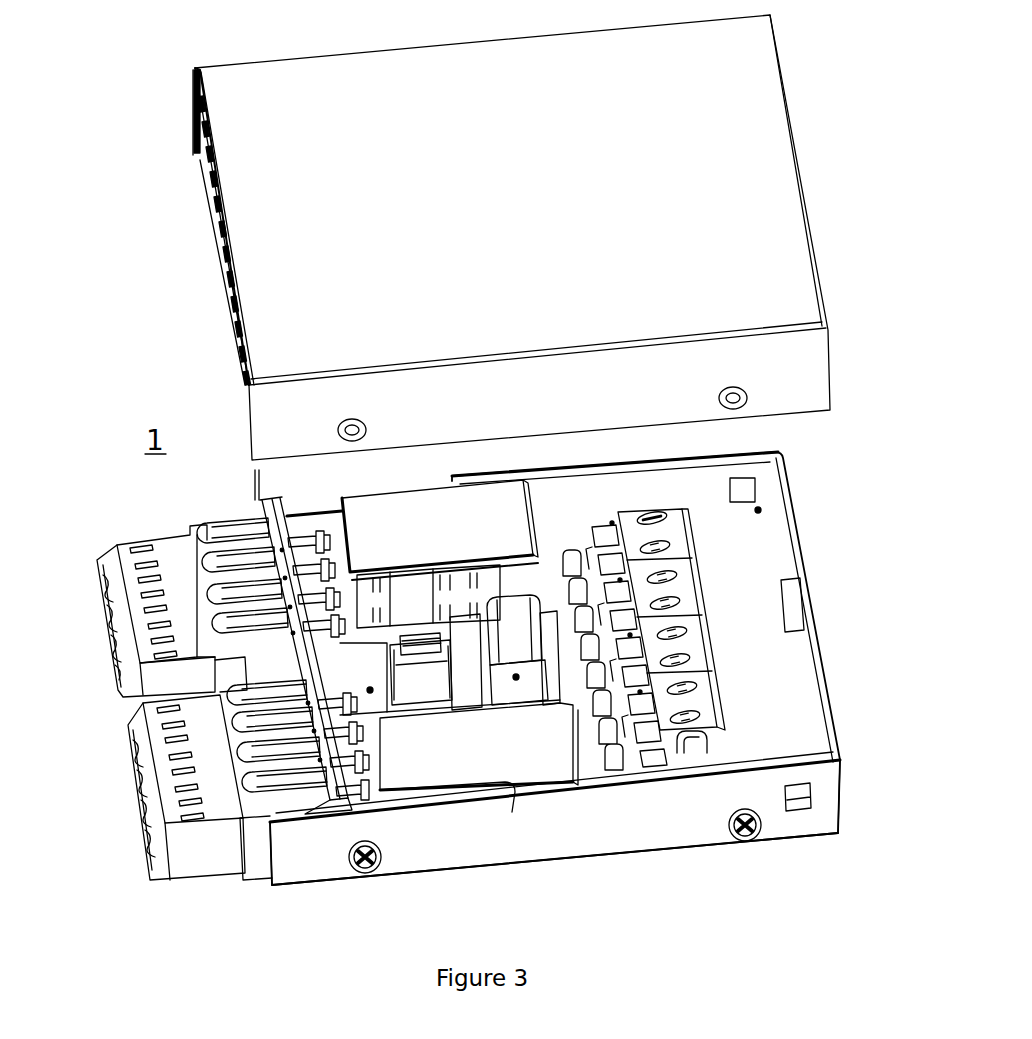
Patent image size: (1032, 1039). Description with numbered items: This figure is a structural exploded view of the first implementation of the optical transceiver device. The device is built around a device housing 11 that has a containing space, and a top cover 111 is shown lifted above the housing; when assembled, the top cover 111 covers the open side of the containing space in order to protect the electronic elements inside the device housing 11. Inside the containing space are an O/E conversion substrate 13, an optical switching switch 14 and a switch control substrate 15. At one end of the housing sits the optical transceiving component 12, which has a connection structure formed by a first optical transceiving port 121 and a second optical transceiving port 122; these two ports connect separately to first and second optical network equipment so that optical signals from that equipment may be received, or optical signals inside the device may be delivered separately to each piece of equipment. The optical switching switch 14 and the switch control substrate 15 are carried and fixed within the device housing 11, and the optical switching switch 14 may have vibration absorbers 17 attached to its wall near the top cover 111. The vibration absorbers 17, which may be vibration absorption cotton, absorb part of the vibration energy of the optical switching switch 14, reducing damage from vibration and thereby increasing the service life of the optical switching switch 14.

The device housing 11 is at (747, 470).
The top cover 111 is at (760, 272).
The optical transceiving component 12 is at (173, 549).
The first optical transceiving port 121 is at (305, 545).
The second optical transceiving port 122 is at (317, 640).
The O/E conversion substrate 13 is at (757, 576).
The optical switching switch 14 is at (517, 575).
The switch control substrate 15 is at (462, 700).
The vibration absorbers 17 is at (525, 757).